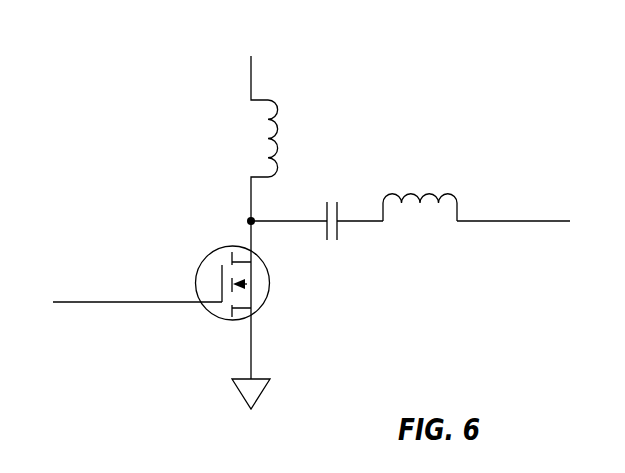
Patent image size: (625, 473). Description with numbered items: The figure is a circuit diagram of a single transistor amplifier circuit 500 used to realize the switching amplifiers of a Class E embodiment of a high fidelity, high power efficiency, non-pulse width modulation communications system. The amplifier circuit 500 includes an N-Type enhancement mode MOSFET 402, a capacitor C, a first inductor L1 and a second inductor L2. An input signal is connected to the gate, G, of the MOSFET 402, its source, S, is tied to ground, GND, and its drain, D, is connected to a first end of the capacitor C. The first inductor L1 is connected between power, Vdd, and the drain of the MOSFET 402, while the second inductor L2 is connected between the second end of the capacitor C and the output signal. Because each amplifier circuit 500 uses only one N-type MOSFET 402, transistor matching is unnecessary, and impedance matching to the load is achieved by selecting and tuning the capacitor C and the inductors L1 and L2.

The single transistor amplifier circuit 500 is at (148, 205).
The N-Type enhancement mode MOSFET 402 is at (218, 343).
The first inductor L1 is at (260, 138).
The second inductor L2 is at (420, 214).
The capacitor C is at (331, 236).